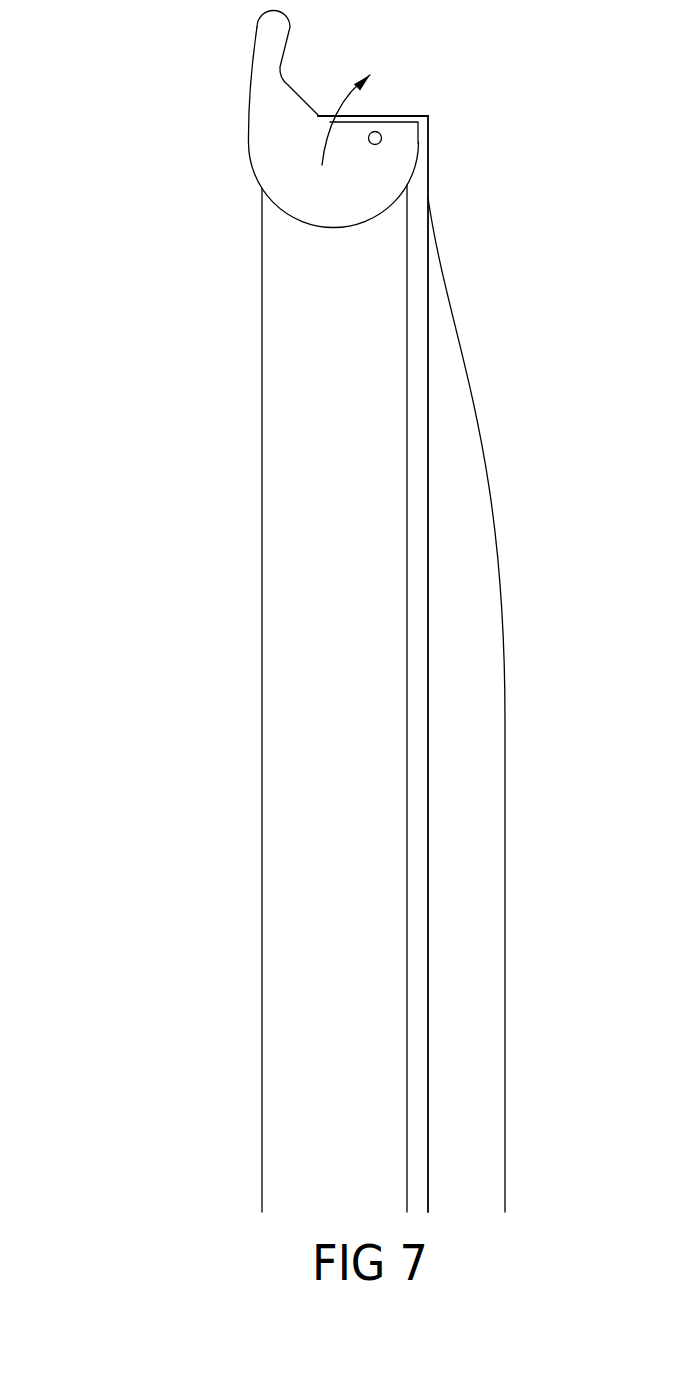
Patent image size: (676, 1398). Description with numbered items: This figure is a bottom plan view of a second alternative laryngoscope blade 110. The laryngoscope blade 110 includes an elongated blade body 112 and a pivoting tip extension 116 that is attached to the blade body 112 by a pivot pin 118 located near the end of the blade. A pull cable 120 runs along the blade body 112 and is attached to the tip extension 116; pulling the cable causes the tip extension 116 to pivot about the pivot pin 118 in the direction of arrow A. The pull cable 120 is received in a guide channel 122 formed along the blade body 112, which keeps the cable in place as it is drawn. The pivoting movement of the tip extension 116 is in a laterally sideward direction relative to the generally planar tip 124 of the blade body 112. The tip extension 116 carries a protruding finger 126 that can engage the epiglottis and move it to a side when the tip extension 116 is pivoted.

The laryngoscope blade 110 is at (147, 590).
The blade body 112 is at (262, 698).
The pivoting tip extension 116 is at (248, 162).
The pivot pin 118 is at (381, 143).
The pull cable 120 is at (418, 914).
The guide channel 122 is at (430, 802).
The generally planar tip 124 is at (405, 114).
The protruding finger 126 is at (273, 30).